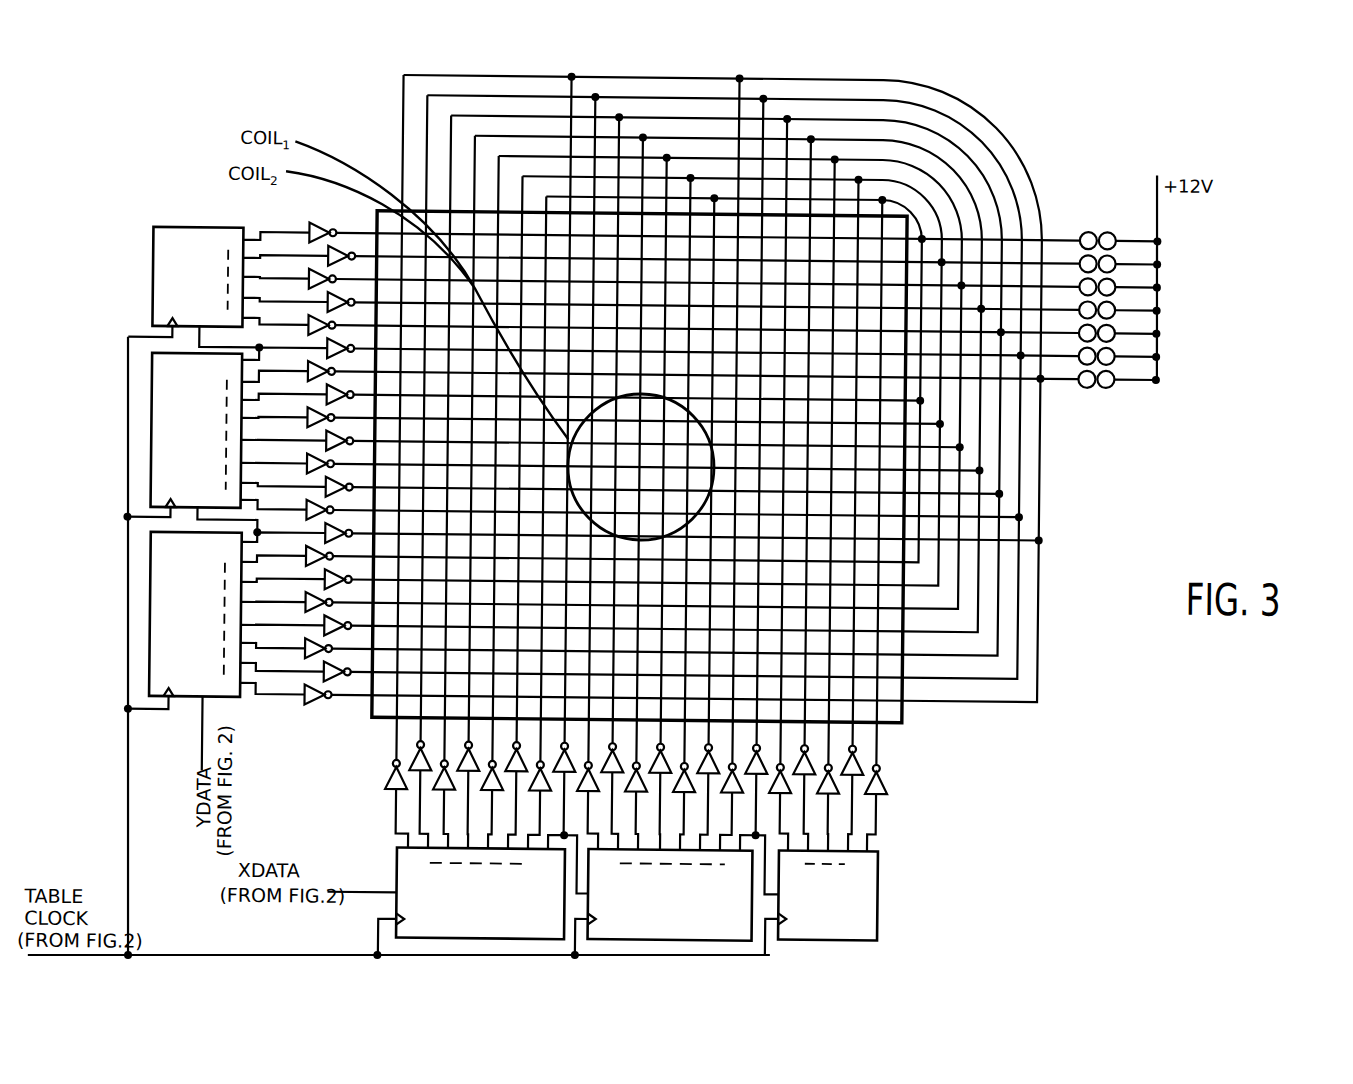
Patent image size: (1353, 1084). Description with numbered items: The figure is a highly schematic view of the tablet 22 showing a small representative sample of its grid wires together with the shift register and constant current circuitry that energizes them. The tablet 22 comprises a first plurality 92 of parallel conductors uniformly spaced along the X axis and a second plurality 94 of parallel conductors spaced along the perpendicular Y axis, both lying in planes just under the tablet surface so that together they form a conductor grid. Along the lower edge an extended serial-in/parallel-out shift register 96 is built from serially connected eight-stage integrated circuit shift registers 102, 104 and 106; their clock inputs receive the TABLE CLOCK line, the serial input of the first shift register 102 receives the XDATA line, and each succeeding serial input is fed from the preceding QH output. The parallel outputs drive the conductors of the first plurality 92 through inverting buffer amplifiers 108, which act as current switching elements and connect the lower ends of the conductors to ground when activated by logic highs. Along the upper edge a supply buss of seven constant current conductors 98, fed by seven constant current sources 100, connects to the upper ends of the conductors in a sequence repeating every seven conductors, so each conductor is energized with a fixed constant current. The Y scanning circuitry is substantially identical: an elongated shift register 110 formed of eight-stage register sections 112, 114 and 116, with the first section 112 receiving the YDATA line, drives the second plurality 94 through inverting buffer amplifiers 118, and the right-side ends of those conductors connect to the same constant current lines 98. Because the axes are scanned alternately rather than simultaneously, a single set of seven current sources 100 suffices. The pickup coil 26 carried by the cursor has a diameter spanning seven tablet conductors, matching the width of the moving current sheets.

The tablet 22 is at (928, 723).
The pickup coil 26 is at (714, 440).
The first plurality of parallel conductors 92 is at (404, 411).
The second plurality of parallel conductors 94 is at (428, 579).
The extended serial-in/parallel-out shift register 96 is at (890, 882).
The constant current conductors 98 is at (1038, 116).
The constant current sources 100 is at (1094, 221).
The shift register 102 is at (400, 855).
The shift register 104 is at (706, 913).
The shift register 106 is at (882, 931).
The inverting buffer amplifiers 108 is at (890, 819).
The elongated serial-in/parallel-out shift register 110 is at (187, 218).
The eight-stage register section 112 is at (151, 588).
The eight-stage register section 114 is at (150, 442).
The eight-stage register section 116 is at (150, 238).
The inverting buffer amplifiers 118 is at (300, 232).